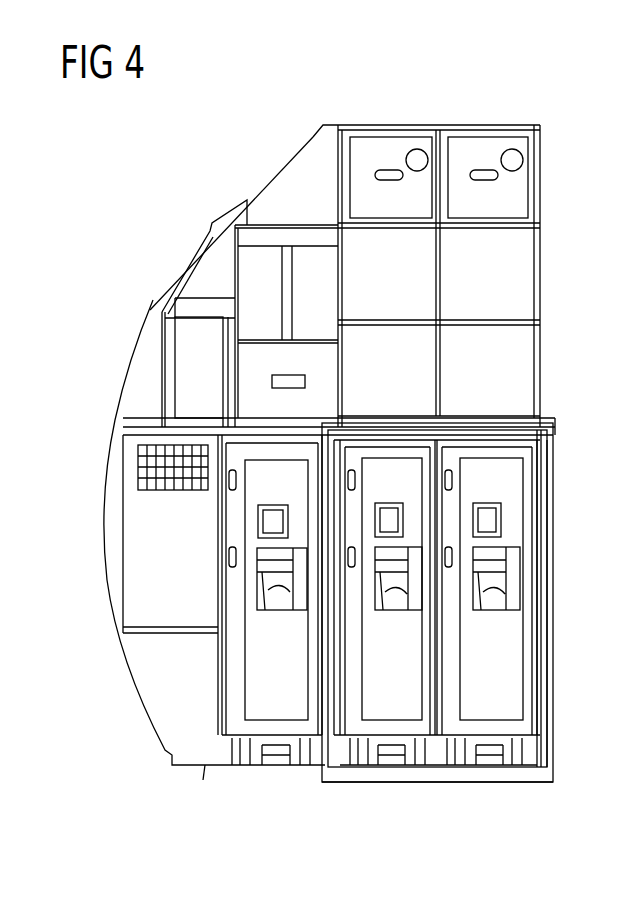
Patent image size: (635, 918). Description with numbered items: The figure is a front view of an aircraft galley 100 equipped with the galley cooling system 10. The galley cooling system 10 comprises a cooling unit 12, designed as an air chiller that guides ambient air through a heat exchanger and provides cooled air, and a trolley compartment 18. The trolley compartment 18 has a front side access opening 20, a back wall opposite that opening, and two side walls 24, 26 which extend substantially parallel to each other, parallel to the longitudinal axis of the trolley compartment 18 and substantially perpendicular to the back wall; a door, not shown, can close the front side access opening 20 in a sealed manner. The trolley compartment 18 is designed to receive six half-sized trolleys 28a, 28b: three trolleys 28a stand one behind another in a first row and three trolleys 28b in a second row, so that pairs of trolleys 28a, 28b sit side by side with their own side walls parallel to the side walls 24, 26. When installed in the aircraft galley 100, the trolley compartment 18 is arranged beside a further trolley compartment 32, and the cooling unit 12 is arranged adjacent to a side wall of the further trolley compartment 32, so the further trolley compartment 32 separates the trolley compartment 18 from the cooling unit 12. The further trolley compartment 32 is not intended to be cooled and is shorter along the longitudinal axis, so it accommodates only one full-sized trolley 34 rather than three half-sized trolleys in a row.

The aircraft galley 100 is at (487, 113).
The galley cooling system 10 is at (554, 387).
The further trolley compartment 32 is at (273, 432).
The cooling unit 12 is at (143, 545).
The trolley compartment 18 is at (541, 538).
The side wall 26 is at (547, 640).
The front side access opening 20 is at (527, 708).
The full-sized trolley 34 is at (270, 710).
The side wall 24 is at (333, 752).
The half-sized trolley 28a is at (390, 708).
The half-sized trolley 28b is at (487, 707).